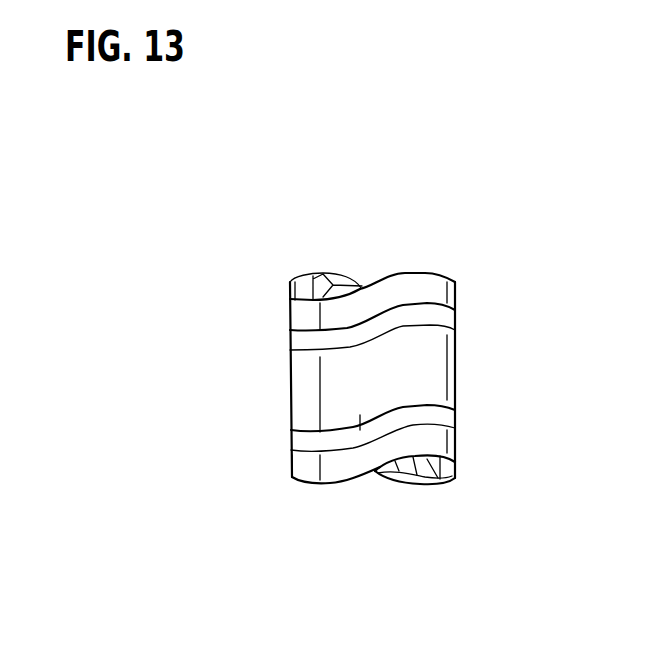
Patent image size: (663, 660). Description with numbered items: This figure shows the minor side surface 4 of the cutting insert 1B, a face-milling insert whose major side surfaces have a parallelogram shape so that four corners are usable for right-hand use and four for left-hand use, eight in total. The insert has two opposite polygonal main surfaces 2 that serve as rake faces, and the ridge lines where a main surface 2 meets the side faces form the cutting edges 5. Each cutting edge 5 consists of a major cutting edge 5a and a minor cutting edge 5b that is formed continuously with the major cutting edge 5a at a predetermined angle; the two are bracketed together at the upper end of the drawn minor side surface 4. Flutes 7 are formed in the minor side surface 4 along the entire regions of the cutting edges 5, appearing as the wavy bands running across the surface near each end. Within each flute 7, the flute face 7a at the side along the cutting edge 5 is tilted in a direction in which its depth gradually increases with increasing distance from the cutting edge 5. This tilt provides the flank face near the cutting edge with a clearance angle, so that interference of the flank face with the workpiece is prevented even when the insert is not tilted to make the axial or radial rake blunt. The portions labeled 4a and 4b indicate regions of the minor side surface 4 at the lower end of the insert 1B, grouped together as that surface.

The cutting insert 1B is at (464, 383).
The main surface 2 is at (341, 281).
The minor side surface 4 is at (382, 577).
The groove portion 4a is at (360, 408).
The groove portion 4b is at (303, 410).
The cutting edge 5 is at (543, 173).
The major cutting edge 5a is at (457, 280).
The minor cutting edge 5b is at (446, 279).
The flute 7 is at (308, 320).
The flute face 7a is at (297, 465).